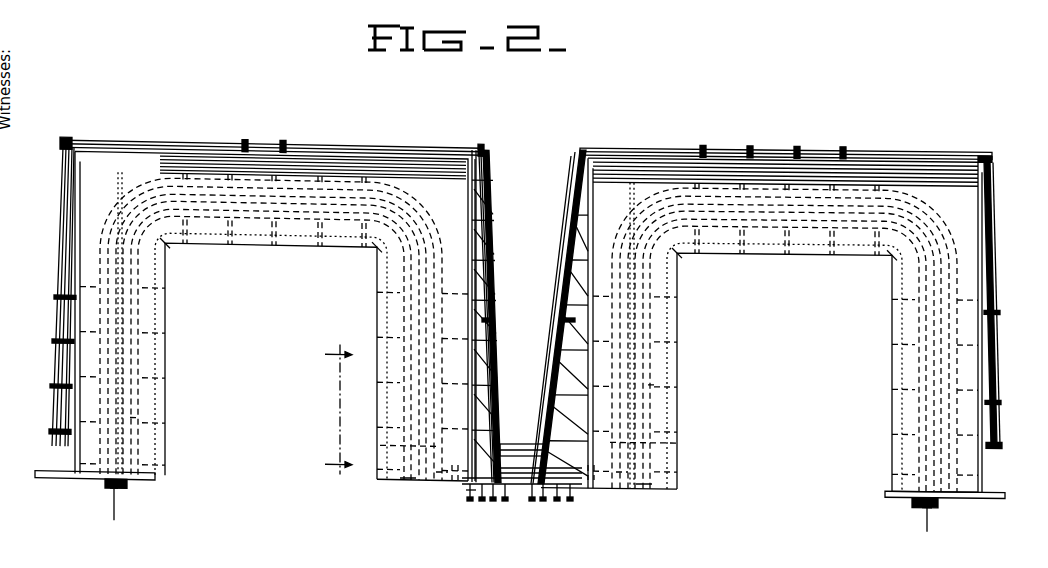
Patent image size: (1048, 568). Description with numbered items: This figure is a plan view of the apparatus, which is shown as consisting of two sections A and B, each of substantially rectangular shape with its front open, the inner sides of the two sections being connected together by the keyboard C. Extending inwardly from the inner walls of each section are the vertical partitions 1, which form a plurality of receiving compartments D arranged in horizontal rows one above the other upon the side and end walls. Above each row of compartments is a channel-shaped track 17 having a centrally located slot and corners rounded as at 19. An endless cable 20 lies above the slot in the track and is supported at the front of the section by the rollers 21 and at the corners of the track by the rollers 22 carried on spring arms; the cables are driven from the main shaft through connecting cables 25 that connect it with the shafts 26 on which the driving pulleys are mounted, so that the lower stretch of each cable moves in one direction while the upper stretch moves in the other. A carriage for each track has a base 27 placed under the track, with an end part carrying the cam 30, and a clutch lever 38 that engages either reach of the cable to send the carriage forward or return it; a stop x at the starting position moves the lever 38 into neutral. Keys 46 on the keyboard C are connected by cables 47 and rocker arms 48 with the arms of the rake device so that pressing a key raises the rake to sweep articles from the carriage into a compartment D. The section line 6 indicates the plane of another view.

The vertical partitions 1 is at (167, 307).
The section line 6 is at (333, 410).
The channel-shaped track 17 is at (125, 330).
The rounded corners 19 is at (185, 252).
The endless cable 20 is at (130, 418).
The rollers 21 is at (110, 490).
The rollers 22 is at (162, 175).
The connecting cables 25 is at (114, 518).
The shafts 26 is at (130, 482).
The base 27 is at (380, 438).
The cam 30 is at (455, 480).
The lever 38 is at (440, 485).
The keys 46 is at (555, 500).
The cables 47 is at (103, 138).
The rocker arms 48 is at (70, 136).
The section A is at (320, 122).
The section B is at (782, 130).
The keyboard C is at (582, 472).
The receiving compartments D is at (288, 235).
The stop x is at (470, 492).